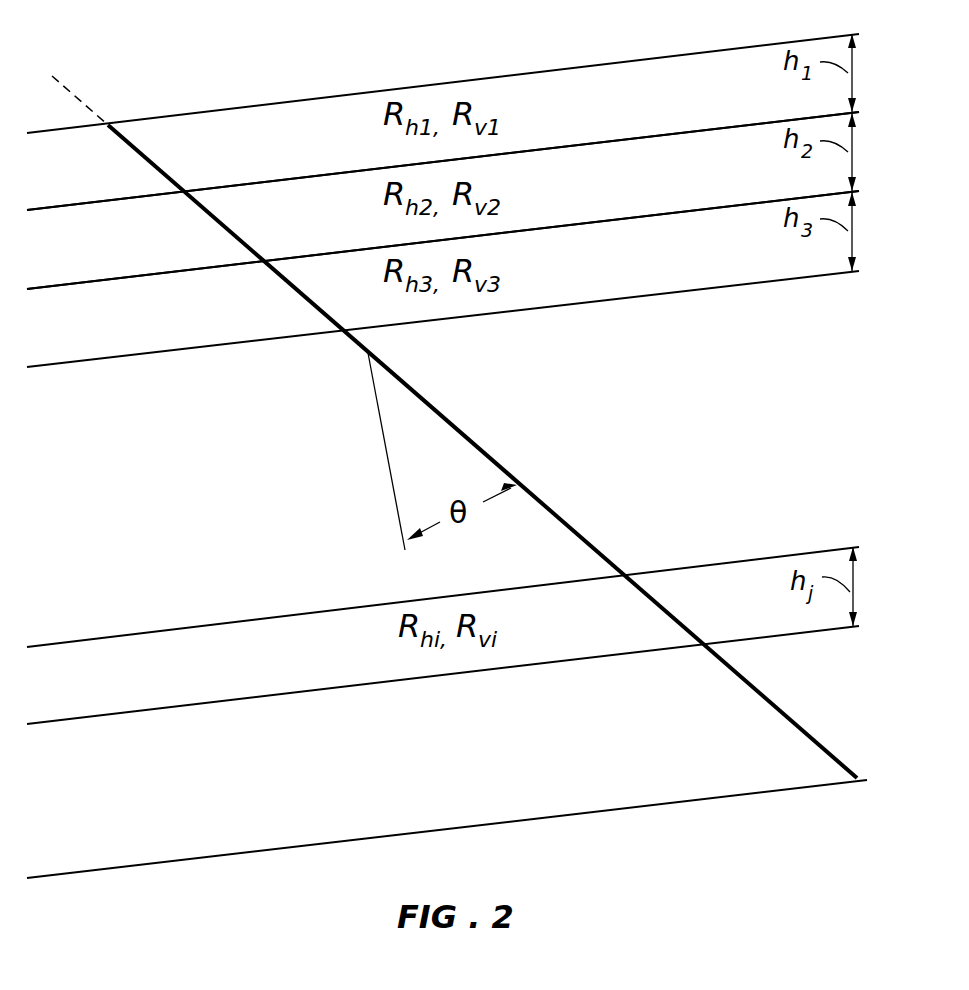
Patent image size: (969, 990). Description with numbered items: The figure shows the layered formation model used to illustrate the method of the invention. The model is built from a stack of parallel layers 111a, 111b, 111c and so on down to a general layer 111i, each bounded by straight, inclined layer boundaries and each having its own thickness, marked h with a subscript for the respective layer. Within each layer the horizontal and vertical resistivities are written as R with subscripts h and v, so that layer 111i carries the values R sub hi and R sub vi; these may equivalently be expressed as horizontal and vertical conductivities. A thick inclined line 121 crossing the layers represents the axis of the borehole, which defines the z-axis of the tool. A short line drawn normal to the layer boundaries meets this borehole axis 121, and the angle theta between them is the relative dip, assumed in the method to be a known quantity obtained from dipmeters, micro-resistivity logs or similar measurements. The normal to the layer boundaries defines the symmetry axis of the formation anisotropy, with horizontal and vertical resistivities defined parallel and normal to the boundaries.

The borehole axis 121 is at (454, 421).
The layer 111a is at (731, 100).
The layer 111b is at (731, 180).
The layer 111c is at (731, 258).
The layer 111i is at (738, 617).